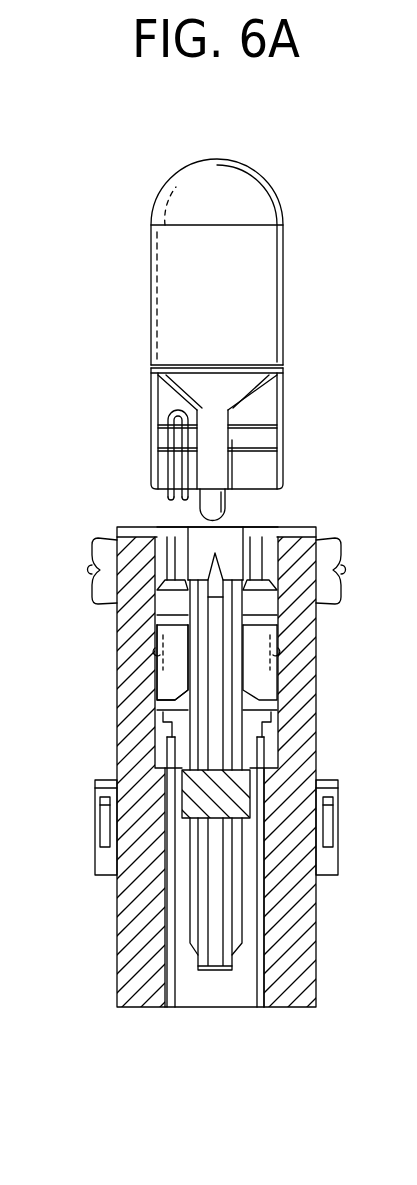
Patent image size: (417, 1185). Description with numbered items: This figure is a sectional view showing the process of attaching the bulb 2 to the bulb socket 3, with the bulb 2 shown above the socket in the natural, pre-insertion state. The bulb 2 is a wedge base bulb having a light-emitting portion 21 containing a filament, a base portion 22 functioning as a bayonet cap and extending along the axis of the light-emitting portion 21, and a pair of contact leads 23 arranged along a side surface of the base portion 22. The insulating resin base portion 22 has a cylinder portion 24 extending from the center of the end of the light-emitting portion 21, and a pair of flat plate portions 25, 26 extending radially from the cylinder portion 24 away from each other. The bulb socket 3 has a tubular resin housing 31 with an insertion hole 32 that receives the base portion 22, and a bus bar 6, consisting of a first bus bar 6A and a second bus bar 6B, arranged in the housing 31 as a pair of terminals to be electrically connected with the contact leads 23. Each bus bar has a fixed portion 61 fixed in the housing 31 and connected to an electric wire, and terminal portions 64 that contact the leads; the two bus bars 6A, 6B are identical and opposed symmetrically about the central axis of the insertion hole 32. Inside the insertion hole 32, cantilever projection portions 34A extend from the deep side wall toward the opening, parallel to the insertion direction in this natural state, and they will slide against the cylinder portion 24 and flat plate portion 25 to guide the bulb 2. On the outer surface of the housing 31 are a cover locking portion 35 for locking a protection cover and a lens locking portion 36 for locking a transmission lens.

The bulb 2 is at (146, 185).
The light-emitting portion 21 is at (151, 247).
The base portion 22 is at (152, 386).
The contact leads 23 is at (168, 470).
The cylinder portion 24 is at (232, 468).
The flat plate portion 25 is at (155, 432).
The flat plate portion 26 is at (282, 432).
The bulb socket 3 is at (103, 525).
The housing 31 is at (135, 665).
The insertion hole 32 is at (252, 545).
The projection portion 34A is at (215, 651).
The cover locking portion 35 is at (92, 547).
The lens locking portion 36 is at (95, 825).
The bus bar 6 is at (162, 683).
The first bus bar 6A is at (114, 668).
The second bus bar 6B is at (272, 683).
The fixed portion 61 is at (168, 920).
The terminal portions 64 is at (165, 637).